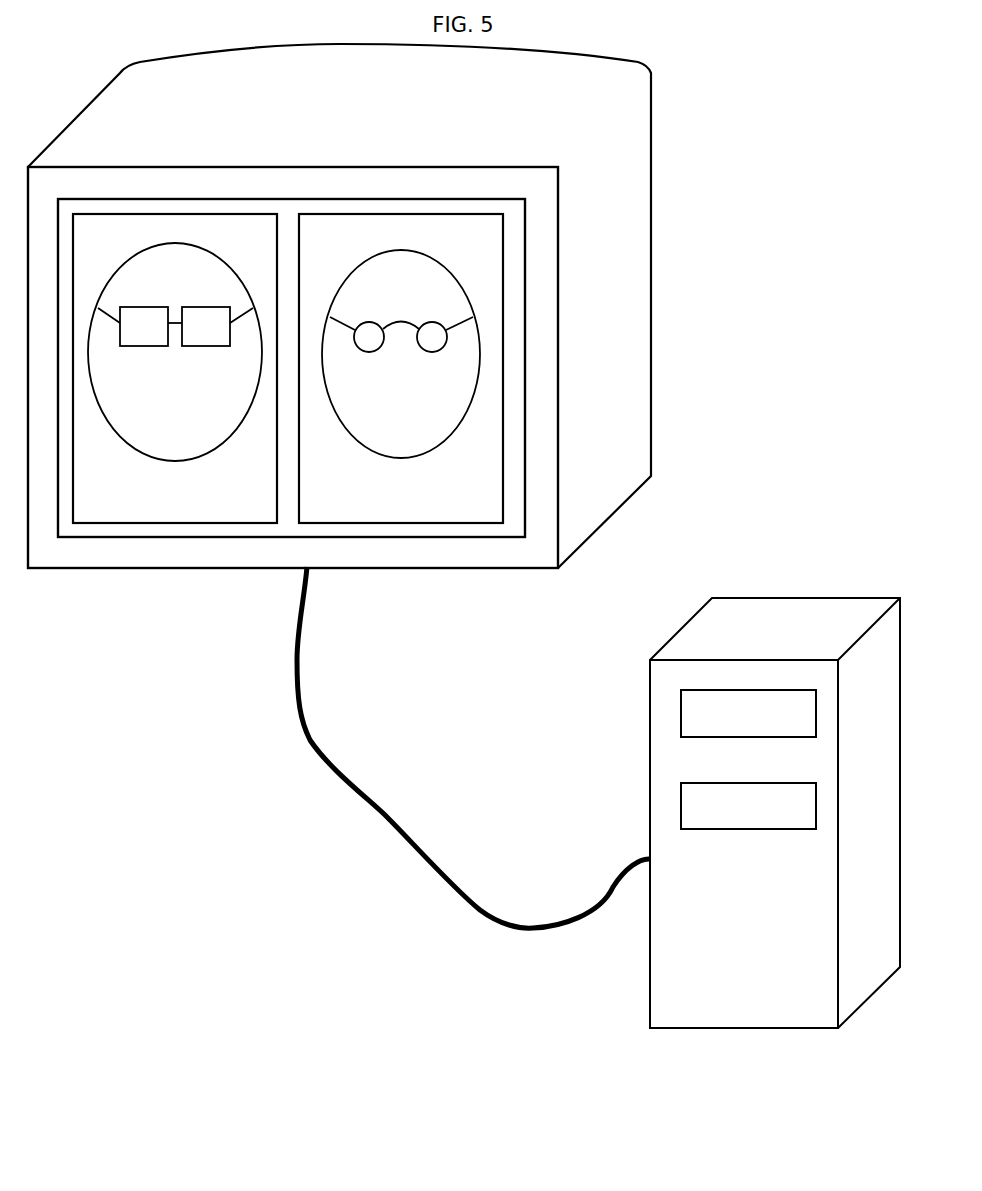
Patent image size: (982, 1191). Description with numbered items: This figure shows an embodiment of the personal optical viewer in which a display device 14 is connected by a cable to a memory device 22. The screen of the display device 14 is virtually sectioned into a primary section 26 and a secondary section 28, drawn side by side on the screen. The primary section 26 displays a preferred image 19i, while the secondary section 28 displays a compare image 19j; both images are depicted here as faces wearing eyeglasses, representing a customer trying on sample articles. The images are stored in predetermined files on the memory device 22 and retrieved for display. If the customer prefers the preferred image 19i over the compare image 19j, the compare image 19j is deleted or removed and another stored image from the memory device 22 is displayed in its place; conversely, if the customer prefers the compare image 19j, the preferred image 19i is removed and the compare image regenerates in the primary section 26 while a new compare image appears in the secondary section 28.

The display device 14 is at (487, 253).
The preferred image 19i is at (175, 339).
The compare image 19j is at (401, 338).
The memory device 22 is at (713, 713).
The primary section 26 is at (152, 507).
The secondary section 28 is at (417, 507).